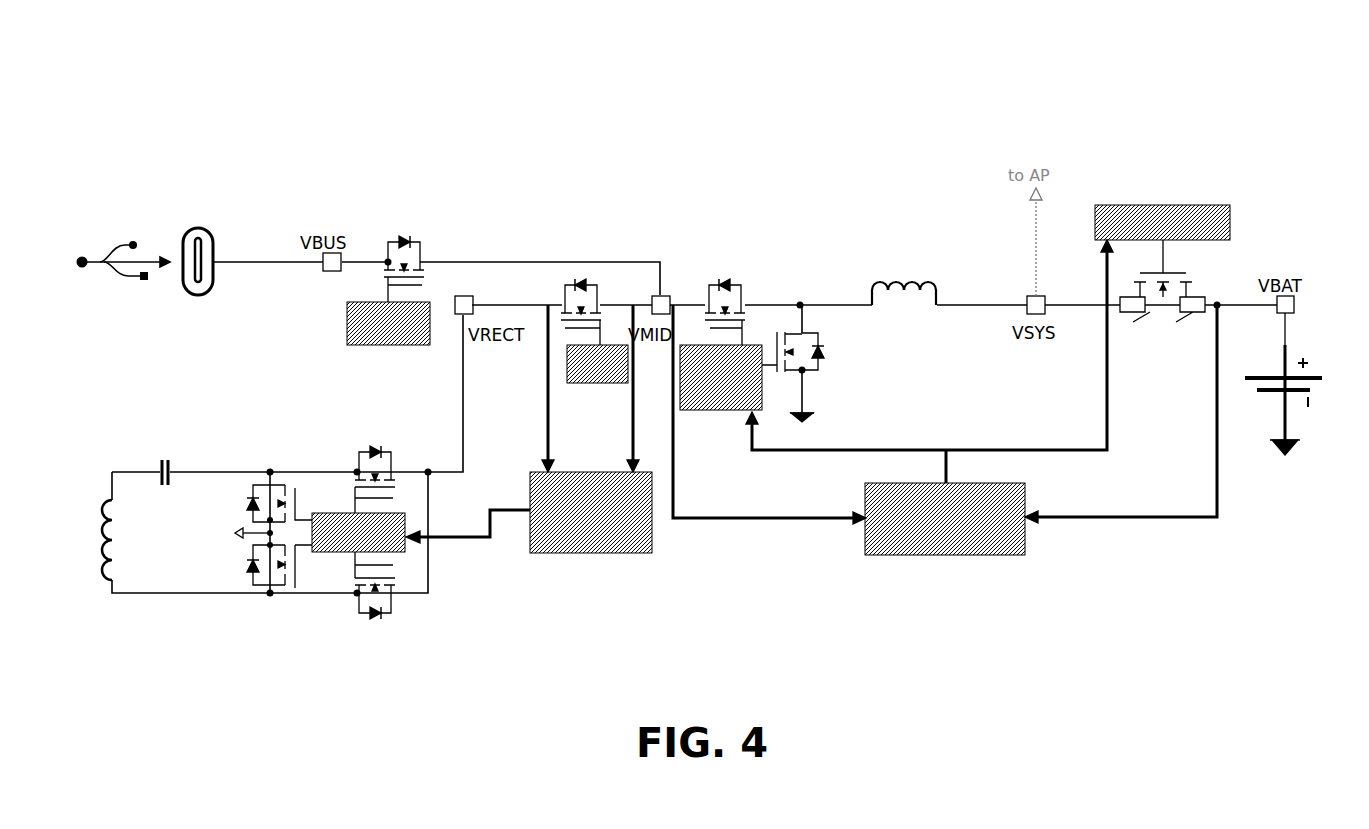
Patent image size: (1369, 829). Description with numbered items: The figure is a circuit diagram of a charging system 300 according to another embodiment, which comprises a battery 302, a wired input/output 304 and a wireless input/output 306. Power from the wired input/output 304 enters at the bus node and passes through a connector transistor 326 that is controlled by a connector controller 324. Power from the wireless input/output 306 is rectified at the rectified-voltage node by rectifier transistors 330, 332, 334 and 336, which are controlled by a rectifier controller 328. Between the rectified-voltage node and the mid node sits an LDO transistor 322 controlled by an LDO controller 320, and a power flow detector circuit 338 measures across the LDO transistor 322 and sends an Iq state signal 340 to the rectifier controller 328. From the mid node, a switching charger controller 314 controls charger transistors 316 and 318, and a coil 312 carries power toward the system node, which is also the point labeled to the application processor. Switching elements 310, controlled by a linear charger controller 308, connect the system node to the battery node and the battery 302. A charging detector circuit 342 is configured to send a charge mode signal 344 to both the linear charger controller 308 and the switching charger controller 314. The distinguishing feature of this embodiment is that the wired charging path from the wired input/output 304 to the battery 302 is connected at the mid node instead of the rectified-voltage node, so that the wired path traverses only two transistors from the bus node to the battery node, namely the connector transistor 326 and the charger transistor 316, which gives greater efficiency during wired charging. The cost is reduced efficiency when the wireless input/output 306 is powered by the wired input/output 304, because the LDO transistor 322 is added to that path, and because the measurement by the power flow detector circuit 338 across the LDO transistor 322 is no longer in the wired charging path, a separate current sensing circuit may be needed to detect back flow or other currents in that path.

The charging system 300 is at (716, 41).
The battery 302 is at (1300, 395).
The wired input/output 304 is at (200, 228).
The wireless input/output 306 is at (108, 500).
The linear charger controller 308 is at (1125, 205).
The switching elements 310 is at (1127, 318).
The coil 312 is at (913, 280).
The switching charger controller 314 is at (696, 412).
The charger transistor 316 is at (738, 285).
The charger transistor 318 is at (812, 372).
The LDO controller 320 is at (580, 387).
The LDO transistor 322 is at (592, 285).
The connector controller 324 is at (372, 347).
The connector transistor 326 is at (418, 240).
The rectifier controller 328 is at (328, 553).
The rectifier transistor 330 is at (365, 456).
The rectifier transistor 332 is at (262, 517).
The rectifier transistor 334 is at (260, 562).
The rectifier transistor 336 is at (385, 614).
The power flow detector circuit 338 is at (592, 555).
The Iq state signal 340 is at (500, 513).
The charging detector circuit 342 is at (930, 557).
The charge mode signal 344 is at (962, 447).